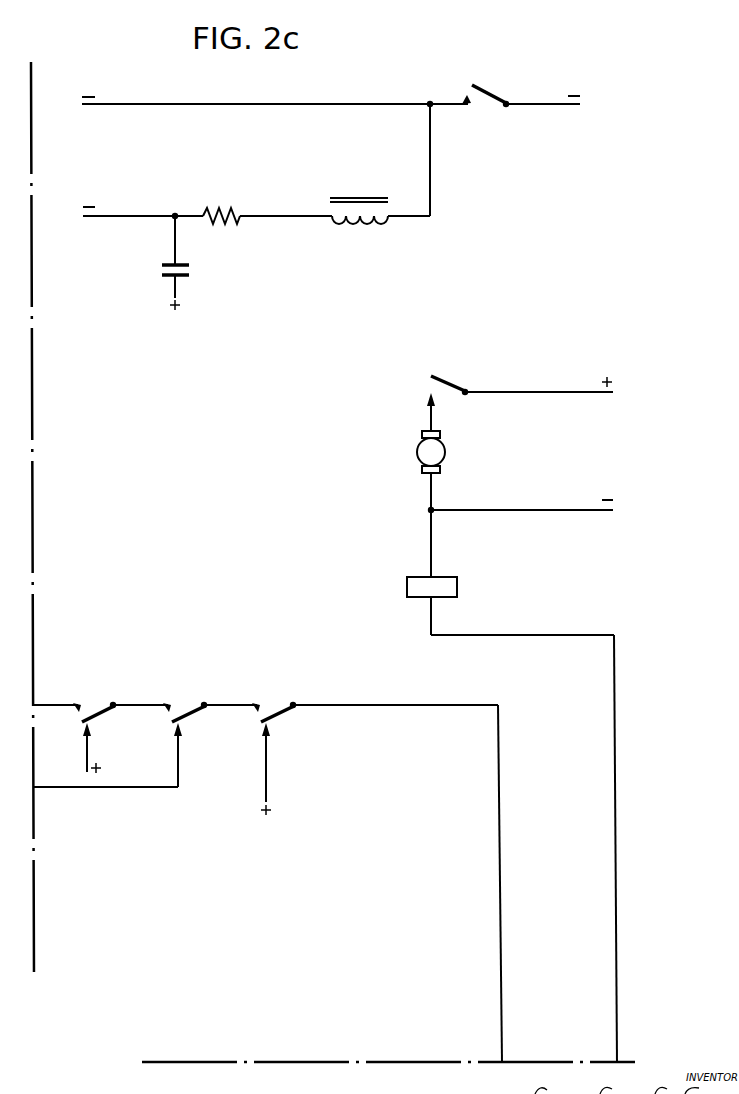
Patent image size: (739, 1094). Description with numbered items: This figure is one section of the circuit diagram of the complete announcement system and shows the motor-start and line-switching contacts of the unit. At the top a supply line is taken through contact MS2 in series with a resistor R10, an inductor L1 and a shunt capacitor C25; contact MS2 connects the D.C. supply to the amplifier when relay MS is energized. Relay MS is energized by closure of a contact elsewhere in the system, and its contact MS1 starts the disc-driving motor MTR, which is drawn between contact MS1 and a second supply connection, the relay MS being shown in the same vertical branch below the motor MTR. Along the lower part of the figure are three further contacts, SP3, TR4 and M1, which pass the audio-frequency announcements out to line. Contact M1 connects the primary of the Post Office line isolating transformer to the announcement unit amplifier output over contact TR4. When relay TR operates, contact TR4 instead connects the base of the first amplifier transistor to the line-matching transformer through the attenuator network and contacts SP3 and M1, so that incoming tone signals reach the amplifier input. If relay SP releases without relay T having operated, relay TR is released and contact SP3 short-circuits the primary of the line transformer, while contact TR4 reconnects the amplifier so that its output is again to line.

The contact MS2 is at (486, 94).
The resistor R10 is at (244, 197).
The inductor L1 is at (359, 197).
The capacitor C25 is at (160, 280).
The contact MS1 is at (447, 378).
The disc-driving motor MTR is at (436, 452).
The relay MS is at (445, 587).
The contact SP3 is at (93, 703).
The contact TR4 is at (185, 703).
The contact M1 is at (274, 703).